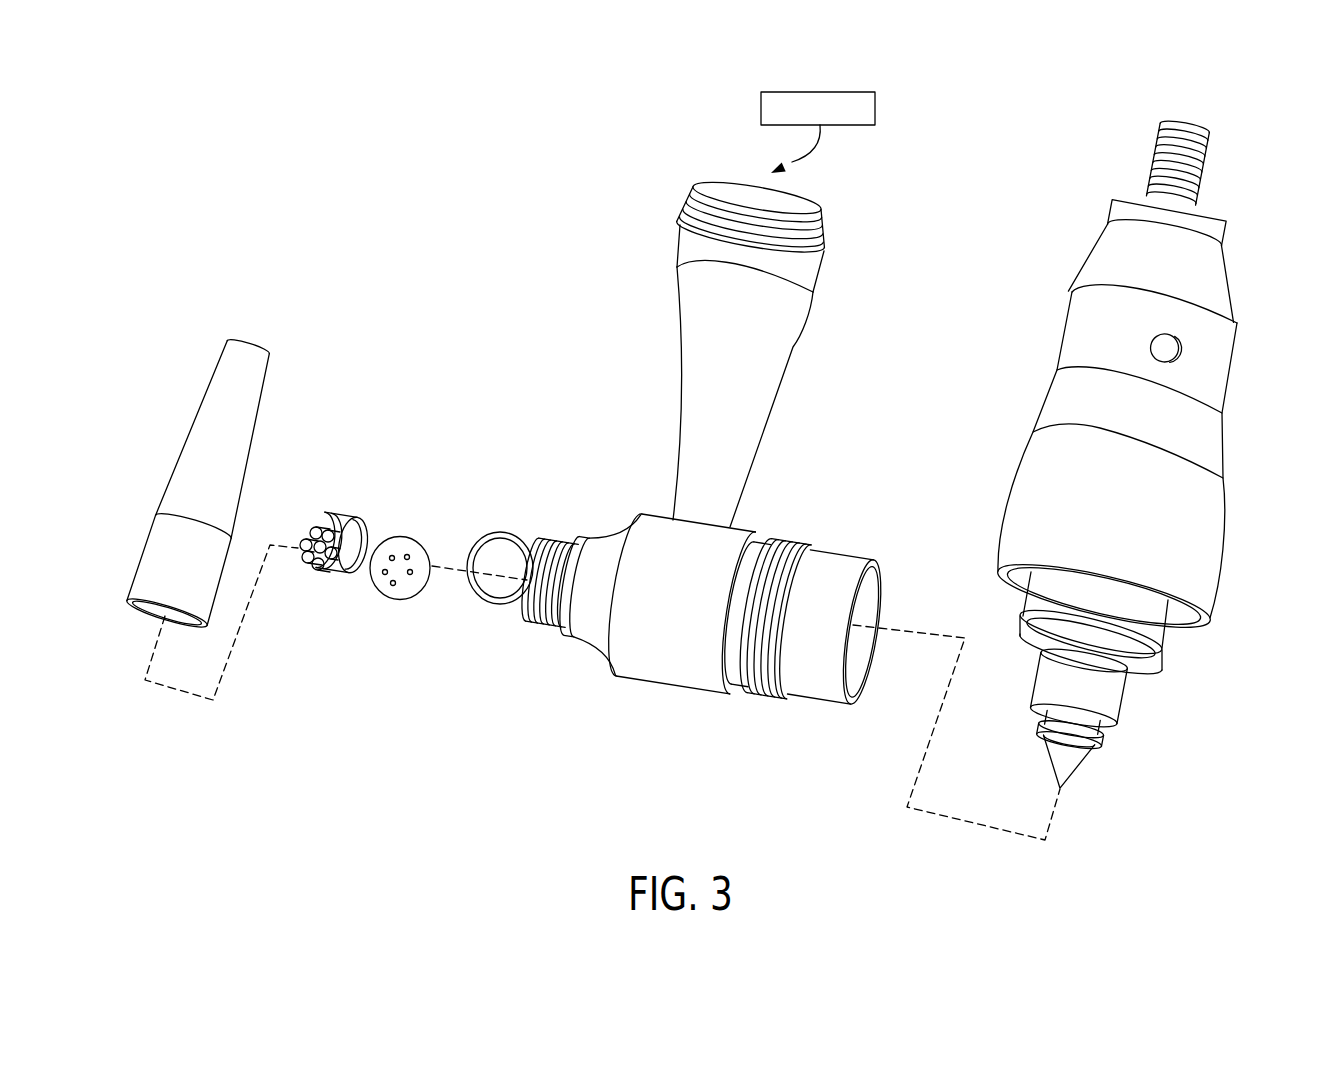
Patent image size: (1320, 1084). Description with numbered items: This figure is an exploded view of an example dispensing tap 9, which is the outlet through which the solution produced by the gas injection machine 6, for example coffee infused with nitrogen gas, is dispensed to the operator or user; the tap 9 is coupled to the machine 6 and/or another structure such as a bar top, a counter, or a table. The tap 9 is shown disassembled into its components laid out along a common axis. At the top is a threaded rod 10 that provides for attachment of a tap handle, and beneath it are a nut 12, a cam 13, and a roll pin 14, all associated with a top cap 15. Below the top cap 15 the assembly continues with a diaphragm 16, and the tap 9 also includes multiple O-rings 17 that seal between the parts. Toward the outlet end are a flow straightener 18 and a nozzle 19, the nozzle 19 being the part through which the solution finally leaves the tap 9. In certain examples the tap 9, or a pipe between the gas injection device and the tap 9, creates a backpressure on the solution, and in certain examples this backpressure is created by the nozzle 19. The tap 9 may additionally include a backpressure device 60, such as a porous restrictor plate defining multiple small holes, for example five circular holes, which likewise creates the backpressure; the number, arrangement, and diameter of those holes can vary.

The gas injection machine 6 is at (320, 196).
The dispensing tap 9 is at (545, 262).
The threaded rod 10 is at (1213, 163).
The nut 12 is at (1215, 234).
The cam 13 is at (1217, 282).
The roll pin 14 is at (1172, 352).
The top cap 15 is at (1216, 517).
The diaphragm 16 is at (1108, 705).
The O-rings 17 is at (498, 604).
The flow straightener 18 is at (320, 563).
The nozzle 19 is at (230, 444).
The backpressure device 60 is at (393, 506).